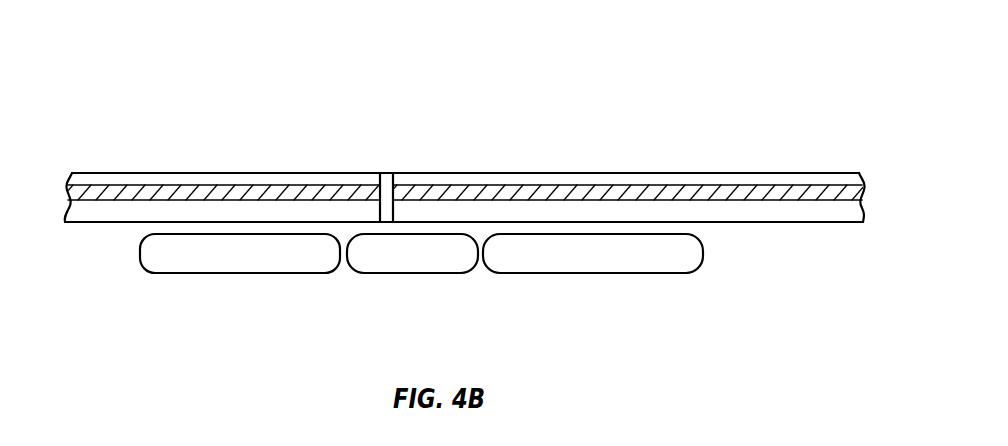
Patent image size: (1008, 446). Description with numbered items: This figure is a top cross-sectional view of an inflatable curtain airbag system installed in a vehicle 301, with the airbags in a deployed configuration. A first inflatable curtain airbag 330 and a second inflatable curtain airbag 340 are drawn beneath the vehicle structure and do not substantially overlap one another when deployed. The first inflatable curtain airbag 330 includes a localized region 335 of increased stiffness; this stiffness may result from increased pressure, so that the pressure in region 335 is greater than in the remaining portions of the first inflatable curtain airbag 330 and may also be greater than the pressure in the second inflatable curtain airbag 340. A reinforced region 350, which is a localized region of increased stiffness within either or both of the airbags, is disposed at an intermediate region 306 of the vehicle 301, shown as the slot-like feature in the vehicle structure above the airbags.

The vehicle 301 is at (123, 142).
The intermediate region 306 is at (387, 155).
The second inflatable curtain airbag 340 is at (262, 247).
The first inflatable curtain airbag 330 is at (592, 250).
The localized region of increased stiffness 335 is at (445, 257).
The reinforced region 350 is at (525, 229).